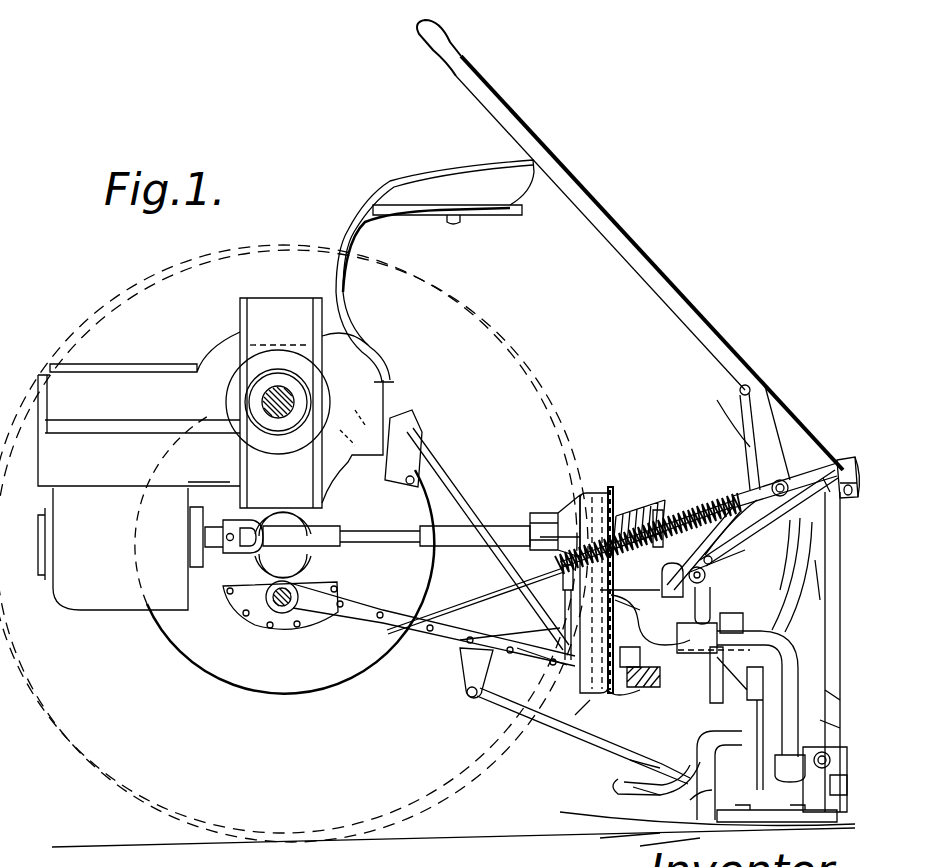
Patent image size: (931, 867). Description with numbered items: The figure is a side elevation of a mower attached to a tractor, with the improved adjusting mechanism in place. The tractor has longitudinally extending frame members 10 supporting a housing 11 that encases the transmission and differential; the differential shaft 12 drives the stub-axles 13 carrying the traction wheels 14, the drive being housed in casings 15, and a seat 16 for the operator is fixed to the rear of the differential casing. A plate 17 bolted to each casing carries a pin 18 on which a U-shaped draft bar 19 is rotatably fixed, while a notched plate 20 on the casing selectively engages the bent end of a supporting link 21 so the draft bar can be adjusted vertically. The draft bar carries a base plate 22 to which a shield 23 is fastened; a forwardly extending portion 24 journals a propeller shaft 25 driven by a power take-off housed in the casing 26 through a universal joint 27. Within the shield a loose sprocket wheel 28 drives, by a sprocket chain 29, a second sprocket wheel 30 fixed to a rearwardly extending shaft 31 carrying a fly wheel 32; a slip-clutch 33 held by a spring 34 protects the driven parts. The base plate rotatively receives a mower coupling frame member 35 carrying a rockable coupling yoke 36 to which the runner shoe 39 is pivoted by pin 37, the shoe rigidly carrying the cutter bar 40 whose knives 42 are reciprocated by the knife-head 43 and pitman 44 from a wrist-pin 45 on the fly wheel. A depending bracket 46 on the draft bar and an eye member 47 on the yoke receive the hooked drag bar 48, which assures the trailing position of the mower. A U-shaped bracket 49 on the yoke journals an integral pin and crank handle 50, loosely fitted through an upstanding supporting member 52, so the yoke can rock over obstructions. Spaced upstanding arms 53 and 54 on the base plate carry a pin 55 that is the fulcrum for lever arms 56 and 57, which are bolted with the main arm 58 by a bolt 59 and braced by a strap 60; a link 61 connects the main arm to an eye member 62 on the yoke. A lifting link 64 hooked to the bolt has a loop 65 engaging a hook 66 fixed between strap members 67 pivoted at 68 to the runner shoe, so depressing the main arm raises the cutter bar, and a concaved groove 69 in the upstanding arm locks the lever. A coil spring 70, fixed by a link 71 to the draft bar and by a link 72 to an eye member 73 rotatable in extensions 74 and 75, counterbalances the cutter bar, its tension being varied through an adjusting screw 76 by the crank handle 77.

The frame members 10 is at (108, 473).
The housing 11 is at (163, 366).
The differential shaft 12 is at (300, 398).
The stub-axles 13 is at (300, 521).
The traction wheels 14 is at (135, 805).
The casings 15 is at (200, 668).
The seat 16 is at (420, 178).
The plate 17 is at (262, 622).
The pin 18 is at (295, 592).
The U-shaped draft bar 19 is at (440, 646).
The notched plate 20 is at (425, 428).
The supporting link 21 is at (458, 498).
The base plate 22 is at (578, 712).
The shield 23 is at (592, 490).
The forwardly extending portion 24 is at (536, 510).
The propeller shaft 25 is at (505, 527).
The casing 26 is at (115, 605).
The universal joint 27 is at (232, 560).
The sprocket wheel 28 is at (620, 480).
The sprocket chain 29 is at (662, 588).
The second sprocket wheel 30 is at (565, 672).
The rearwardly extending shaft 31 is at (560, 628).
The fly wheel 32 is at (565, 605).
The slip-clutch 33 is at (640, 525).
The spring 34 is at (614, 506).
The mower coupling frame member 35 is at (770, 630).
The coupling yoke 36 is at (700, 740).
The pin 37 is at (620, 784).
The runner shoe 39 is at (632, 790).
The mower cutter bar 40 is at (660, 845).
The knives 42 is at (688, 800).
The knife-head 43 is at (625, 838).
The pitman 44 is at (755, 722).
The wrist-pin 45 is at (800, 560).
The depending bracket 46 is at (462, 676).
The eye member 47 is at (630, 760).
The drag bar 48 is at (490, 705).
The U-shaped bracket 49 is at (662, 688).
The pin and crank handle 50 is at (665, 720).
The upstanding supporting member 52 is at (840, 680).
The upstanding arm 53 is at (706, 580).
The upstanding arm 54 is at (690, 607).
The pin 55 is at (722, 565).
The arm 56 is at (740, 520).
The arm 57 is at (772, 530).
The arm 58 is at (662, 282).
The bolt 59 is at (828, 470).
The strap 60 is at (740, 387).
The link 61 is at (818, 585).
The eye member 62 is at (826, 756).
The lifting link 64 is at (785, 525).
The loop 65 is at (775, 648).
The hook 66 is at (836, 700).
The strap members 67 is at (840, 725).
The pivot 68 is at (826, 786).
The concaved groove 69 is at (712, 604).
The coil spring 70 is at (668, 520).
The link 71 is at (510, 590).
The link 72 is at (745, 470).
The eye member 73 is at (773, 400).
The extension 74 is at (797, 440).
The extension 75 is at (842, 468).
The adjusting screw 76 is at (735, 500).
The crank handle 77 is at (850, 452).